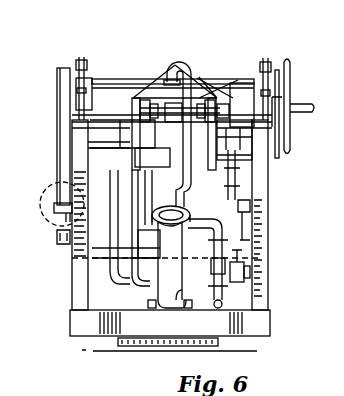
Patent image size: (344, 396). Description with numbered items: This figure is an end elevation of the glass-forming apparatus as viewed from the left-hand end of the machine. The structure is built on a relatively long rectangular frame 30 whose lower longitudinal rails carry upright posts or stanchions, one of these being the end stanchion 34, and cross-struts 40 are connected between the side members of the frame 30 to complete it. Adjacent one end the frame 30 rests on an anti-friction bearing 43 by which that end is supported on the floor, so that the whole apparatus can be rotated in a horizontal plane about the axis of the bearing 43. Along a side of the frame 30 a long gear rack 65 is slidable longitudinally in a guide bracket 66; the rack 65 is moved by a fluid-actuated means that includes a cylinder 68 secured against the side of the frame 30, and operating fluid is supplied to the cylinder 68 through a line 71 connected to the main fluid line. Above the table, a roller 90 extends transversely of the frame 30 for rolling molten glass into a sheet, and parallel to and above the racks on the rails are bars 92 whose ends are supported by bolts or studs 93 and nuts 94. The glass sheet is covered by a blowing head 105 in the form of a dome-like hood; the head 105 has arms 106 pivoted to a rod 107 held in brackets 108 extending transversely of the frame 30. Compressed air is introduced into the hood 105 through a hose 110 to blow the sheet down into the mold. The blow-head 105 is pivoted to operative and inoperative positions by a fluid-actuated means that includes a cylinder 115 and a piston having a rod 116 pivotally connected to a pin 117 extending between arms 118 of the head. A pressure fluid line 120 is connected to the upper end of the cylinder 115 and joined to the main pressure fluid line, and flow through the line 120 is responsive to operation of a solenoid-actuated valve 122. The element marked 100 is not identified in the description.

The frame 30 is at (172, 228).
The upright post or stanchion 34 is at (72, 283).
The cross-struts 40 is at (74, 322).
The anti-friction bearing 43 is at (150, 350).
The gear rack 65 is at (54, 208).
The guide bracket 66 is at (57, 236).
The cylinder 68 is at (47, 213).
The fluid line 71 is at (98, 242).
The roller 90 is at (124, 84).
The bars 92 is at (188, 76).
The bolts or studs 93 is at (164, 64).
The nuts 94 is at (66, 68).
The handwheel 100 is at (290, 64).
The blowing head 105 is at (170, 72).
The arms 106 is at (214, 118).
The rod 107 is at (166, 106).
The brackets 108 is at (90, 152).
The hose 110 is at (176, 122).
The cylinder 115 is at (170, 310).
The rod 116 is at (172, 156).
The pin 117 is at (200, 85).
The arms 118 is at (132, 105).
The pressure fluid line 120 is at (226, 222).
The solenoid-actuated valve 122 is at (250, 270).